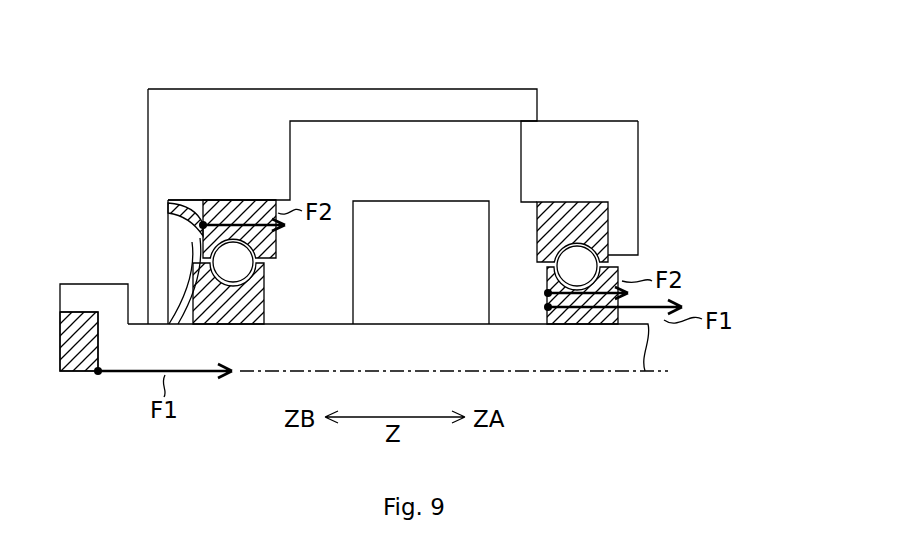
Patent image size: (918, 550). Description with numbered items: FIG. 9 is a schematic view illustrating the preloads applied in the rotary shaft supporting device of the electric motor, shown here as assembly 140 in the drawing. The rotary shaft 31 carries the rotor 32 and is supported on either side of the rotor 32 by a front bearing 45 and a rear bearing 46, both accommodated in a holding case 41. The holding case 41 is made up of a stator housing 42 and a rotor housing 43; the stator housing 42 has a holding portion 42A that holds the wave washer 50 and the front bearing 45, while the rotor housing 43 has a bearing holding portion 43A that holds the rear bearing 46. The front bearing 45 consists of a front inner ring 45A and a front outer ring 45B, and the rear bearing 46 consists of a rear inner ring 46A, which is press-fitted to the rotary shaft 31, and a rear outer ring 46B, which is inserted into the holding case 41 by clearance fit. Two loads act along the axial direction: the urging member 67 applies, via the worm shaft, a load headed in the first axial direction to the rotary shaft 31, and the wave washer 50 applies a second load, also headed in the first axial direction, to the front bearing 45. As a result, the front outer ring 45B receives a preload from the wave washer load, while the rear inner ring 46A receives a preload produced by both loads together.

The holding case 41 is at (580, 50).
The stator housing 42 is at (508, 100).
The holding portion 42A is at (160, 192).
The rotor housing 43 is at (568, 130).
The bearing holding portion 43A is at (636, 232).
The front bearing 45 is at (245, 200).
The front inner ring 45A is at (266, 297).
The front outer ring 45B is at (277, 241).
The rear bearing 46 is at (577, 202).
The rear inner ring 46A is at (537, 314).
The rear outer ring 46B is at (537, 222).
The wave washer 50 is at (188, 222).
The rotor 32 is at (424, 212).
The rotary shaft 31 is at (600, 363).
The urging member 67 is at (82, 367).
The motor 140 is at (709, 392).